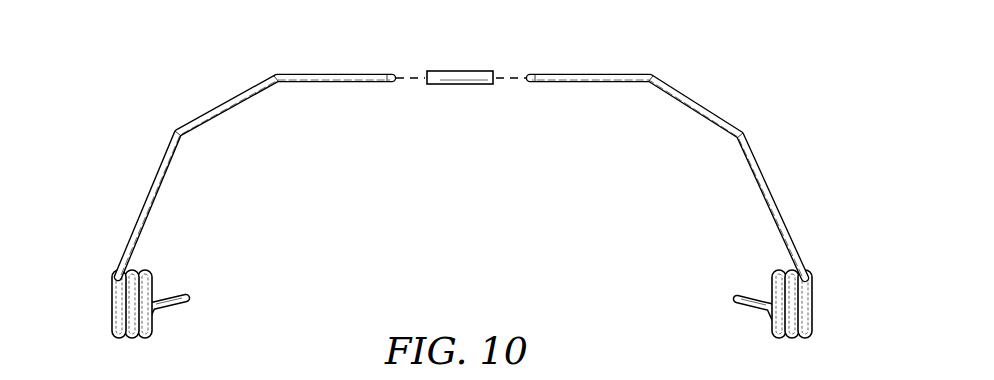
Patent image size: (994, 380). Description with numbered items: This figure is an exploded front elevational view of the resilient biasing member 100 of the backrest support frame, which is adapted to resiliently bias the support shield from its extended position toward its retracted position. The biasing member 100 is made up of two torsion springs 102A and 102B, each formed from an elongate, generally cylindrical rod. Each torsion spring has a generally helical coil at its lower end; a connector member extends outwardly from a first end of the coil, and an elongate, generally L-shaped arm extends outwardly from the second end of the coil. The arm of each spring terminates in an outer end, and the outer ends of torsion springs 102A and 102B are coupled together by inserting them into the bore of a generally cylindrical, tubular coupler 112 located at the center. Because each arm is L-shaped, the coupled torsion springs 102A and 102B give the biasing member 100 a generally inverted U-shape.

The biasing member 100 is at (668, 45).
The torsion spring 102A is at (795, 165).
The torsion spring 102B is at (135, 180).
The coupler 112 is at (452, 86).